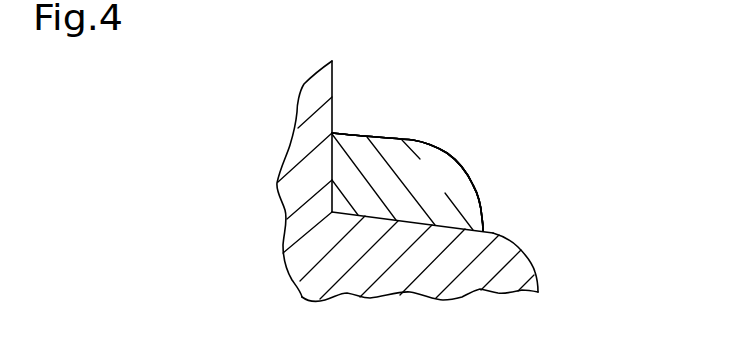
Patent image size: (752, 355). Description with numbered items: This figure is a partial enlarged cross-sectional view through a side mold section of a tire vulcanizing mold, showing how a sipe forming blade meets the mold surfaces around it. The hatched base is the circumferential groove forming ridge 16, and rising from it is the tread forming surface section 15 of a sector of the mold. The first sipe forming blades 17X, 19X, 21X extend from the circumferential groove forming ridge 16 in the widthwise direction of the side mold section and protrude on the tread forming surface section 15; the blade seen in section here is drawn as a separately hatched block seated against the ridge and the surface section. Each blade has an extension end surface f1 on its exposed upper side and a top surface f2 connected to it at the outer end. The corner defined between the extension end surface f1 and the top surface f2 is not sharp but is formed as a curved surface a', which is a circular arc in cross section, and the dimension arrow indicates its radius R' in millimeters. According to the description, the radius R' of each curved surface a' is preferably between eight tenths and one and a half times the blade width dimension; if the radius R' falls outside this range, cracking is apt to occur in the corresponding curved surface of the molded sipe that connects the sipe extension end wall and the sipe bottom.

The tread forming surface section 15 is at (333, 87).
The circumferential groove forming ridge 16 is at (523, 252).
The first sipe forming blade 17X is at (430, 142).
The first sipe forming blade 19X is at (407, 182).
The first sipe forming blade 21X is at (407, 182).
The extension end surface f1 is at (376, 132).
The top surface f2 is at (485, 204).
The curved surface a' is at (483, 156).
The radius R' is at (437, 180).